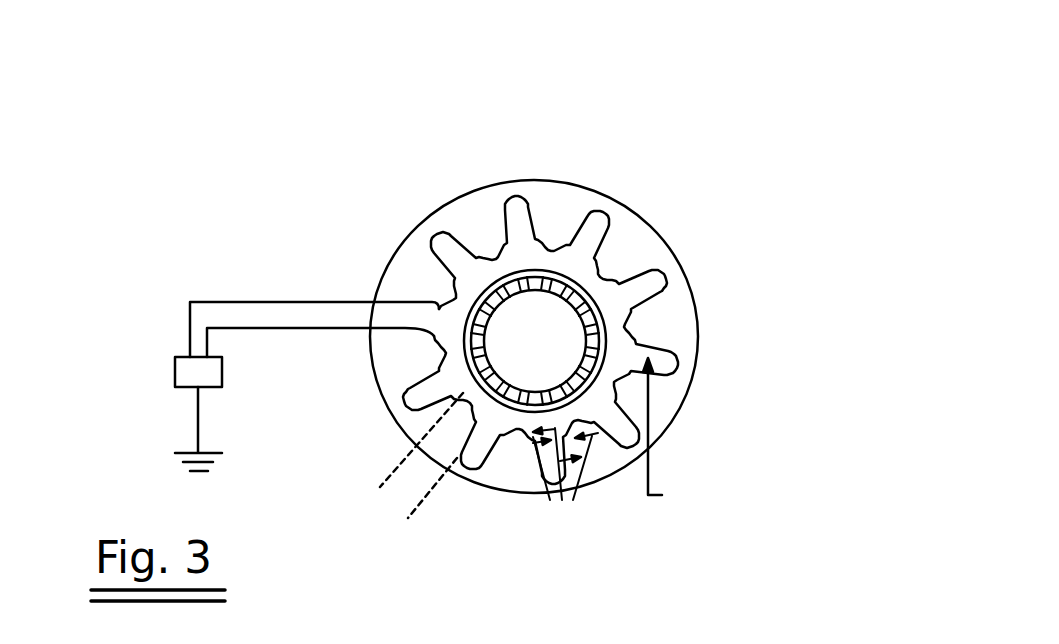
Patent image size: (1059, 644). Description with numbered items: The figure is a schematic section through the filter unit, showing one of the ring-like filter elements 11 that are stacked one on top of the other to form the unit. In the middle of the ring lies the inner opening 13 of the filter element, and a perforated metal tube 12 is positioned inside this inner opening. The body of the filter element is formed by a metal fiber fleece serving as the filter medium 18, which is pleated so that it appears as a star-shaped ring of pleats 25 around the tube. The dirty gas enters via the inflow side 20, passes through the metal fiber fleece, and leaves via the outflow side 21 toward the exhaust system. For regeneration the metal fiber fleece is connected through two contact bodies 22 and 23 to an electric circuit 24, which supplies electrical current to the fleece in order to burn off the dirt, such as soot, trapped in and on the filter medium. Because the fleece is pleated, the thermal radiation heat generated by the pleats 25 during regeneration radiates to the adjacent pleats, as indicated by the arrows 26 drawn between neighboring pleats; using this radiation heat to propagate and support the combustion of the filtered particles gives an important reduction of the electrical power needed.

The filter element 11 is at (640, 146).
The perforated metal tube 12 is at (583, 318).
The inner opening 13 is at (593, 298).
The filter medium 18 is at (640, 374).
The inflow side 20 is at (665, 337).
The outflow side 21 is at (676, 432).
The contact body 22 is at (349, 283).
The contact body 23 is at (347, 352).
The electric circuit 24 is at (150, 304).
The pleats 25 is at (386, 480).
The arrows 26 is at (565, 491).